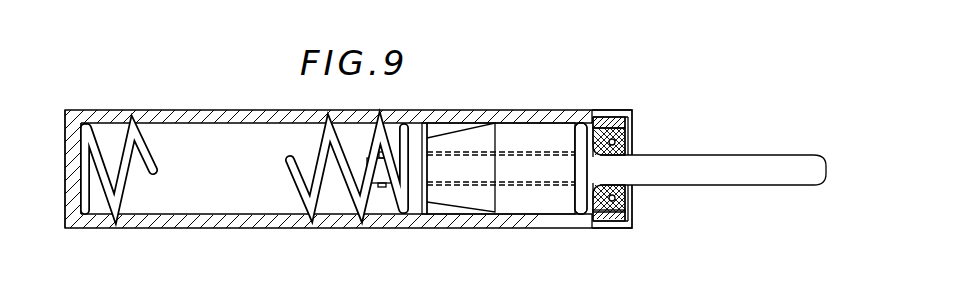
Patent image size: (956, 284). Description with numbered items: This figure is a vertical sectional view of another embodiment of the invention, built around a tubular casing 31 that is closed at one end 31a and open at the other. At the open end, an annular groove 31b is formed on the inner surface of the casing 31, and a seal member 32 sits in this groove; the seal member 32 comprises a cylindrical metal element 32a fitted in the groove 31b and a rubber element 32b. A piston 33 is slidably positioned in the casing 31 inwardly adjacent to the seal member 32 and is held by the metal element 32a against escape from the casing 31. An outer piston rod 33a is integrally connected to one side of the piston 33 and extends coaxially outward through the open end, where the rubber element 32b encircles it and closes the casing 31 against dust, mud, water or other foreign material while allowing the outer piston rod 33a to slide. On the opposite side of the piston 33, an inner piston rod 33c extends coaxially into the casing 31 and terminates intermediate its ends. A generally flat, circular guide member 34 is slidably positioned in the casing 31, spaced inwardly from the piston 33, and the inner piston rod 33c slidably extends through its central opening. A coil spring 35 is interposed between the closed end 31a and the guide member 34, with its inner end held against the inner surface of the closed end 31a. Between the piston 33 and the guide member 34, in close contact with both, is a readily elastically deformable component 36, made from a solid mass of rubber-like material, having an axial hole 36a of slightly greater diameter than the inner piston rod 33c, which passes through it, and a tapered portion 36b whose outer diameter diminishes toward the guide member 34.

The tubular casing 31 is at (170, 222).
The closed end 31a is at (77, 173).
The annular groove 31b is at (616, 215).
The seal member 32 is at (591, 215).
The cylindrical metal element 32a is at (627, 119).
The rubber element 32b is at (619, 143).
The piston 33 is at (583, 137).
The outer piston rod 33a is at (745, 178).
The inner piston rod 33c is at (391, 176).
The guide member 34 is at (421, 200).
The coil spring 35 is at (298, 188).
The elastically deformable component 36 is at (523, 203).
The axial hole 36a is at (553, 188).
The tapered portion 36b is at (452, 205).